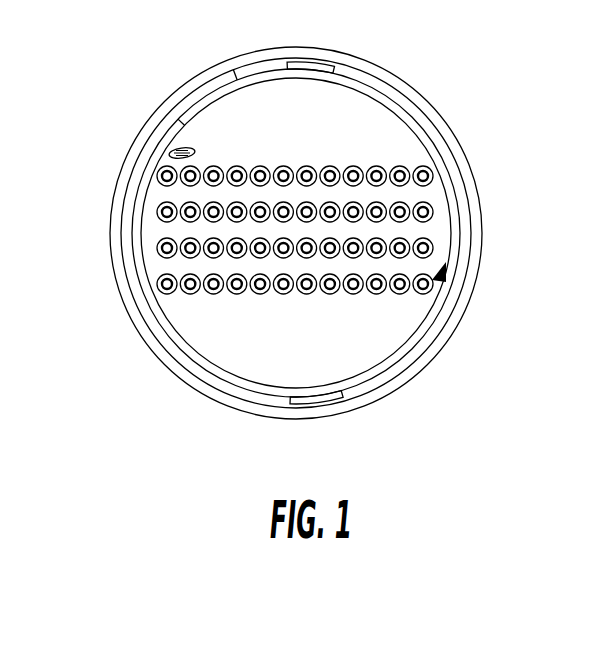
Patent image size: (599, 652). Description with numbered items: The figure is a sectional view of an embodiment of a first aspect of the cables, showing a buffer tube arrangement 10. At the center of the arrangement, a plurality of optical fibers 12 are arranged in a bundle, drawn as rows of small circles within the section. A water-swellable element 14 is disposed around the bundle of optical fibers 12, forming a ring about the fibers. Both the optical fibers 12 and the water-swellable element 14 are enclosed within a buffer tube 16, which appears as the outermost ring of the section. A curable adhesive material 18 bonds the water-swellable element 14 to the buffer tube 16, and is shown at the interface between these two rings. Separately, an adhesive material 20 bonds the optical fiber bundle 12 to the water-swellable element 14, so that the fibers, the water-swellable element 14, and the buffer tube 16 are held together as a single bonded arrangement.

The buffer tube arrangement 10 is at (267, 240).
The optical fibers 12 is at (190, 295).
The water-swellable element 14 is at (142, 188).
The buffer tube 16 is at (233, 413).
The curable adhesive material 18 is at (312, 60).
The adhesive material 20 is at (172, 150).